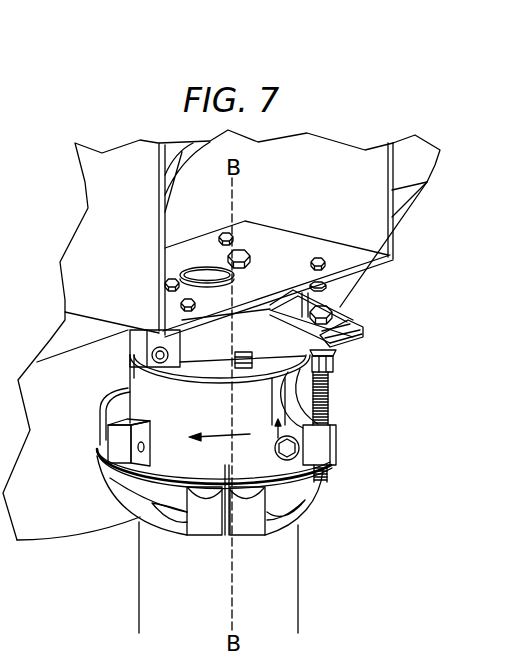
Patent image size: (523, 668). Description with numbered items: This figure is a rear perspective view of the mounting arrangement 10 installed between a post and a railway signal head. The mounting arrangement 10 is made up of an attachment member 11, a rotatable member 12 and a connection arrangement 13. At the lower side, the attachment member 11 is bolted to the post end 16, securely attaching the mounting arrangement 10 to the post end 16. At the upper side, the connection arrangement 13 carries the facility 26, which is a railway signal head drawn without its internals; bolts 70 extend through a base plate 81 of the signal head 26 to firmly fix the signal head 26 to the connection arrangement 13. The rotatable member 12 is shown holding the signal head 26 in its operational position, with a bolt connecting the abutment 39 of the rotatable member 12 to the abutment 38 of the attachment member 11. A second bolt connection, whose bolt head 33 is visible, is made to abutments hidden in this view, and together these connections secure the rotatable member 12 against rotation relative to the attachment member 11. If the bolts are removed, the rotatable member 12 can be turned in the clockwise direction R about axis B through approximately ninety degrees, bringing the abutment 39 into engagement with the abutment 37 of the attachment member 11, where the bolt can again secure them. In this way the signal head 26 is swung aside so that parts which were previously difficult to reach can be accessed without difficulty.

The mounting arrangement 10 is at (354, 478).
The attachment member 11 is at (125, 492).
The rotatable member 12 is at (207, 410).
The connection arrangement 13 is at (350, 308).
The post end 16 is at (296, 602).
The signal head 26 is at (367, 185).
The bolt head 33 is at (293, 459).
The abutment 37 is at (117, 447).
The abutment 38 is at (332, 411).
The abutment 39 is at (300, 428).
The bolts 70 is at (318, 257).
The base plate 81 is at (373, 260).